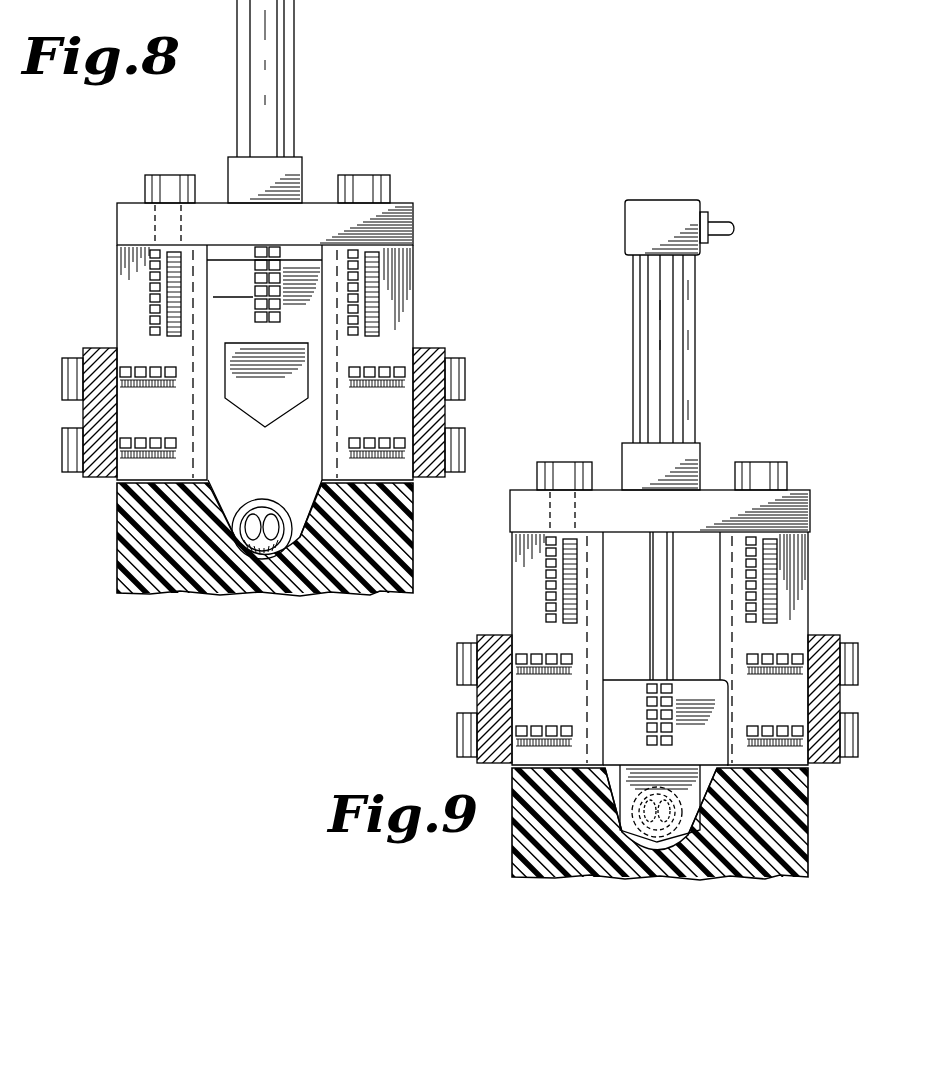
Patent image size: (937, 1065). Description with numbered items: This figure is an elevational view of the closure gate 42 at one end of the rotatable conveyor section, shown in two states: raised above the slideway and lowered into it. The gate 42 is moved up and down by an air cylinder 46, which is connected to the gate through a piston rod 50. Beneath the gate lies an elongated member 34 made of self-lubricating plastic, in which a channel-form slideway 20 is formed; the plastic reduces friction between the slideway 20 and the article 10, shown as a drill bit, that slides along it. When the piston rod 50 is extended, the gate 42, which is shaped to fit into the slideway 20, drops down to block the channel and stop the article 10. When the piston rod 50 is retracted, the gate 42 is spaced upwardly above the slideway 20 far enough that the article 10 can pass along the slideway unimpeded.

In FIG. 8, the article 10 is at (283, 540).
In FIG. 8, the slideway 20 is at (216, 501).
In FIG. 9, the slideway 20 is at (700, 814).
In FIG. 8, the elongated member 34 is at (137, 553).
In FIG. 9, the elongated member 34 is at (513, 872).
In FIG. 8, the gate 42 is at (293, 372).
In FIG. 9, the gate 42 is at (620, 707).
In FIG. 8, the air cylinder 46 is at (295, 60).
In FIG. 9, the air cylinder 46 is at (687, 358).
In FIG. 8, the piston rod 50 is at (277, 253).
In FIG. 9, the piston rod 50 is at (663, 623).